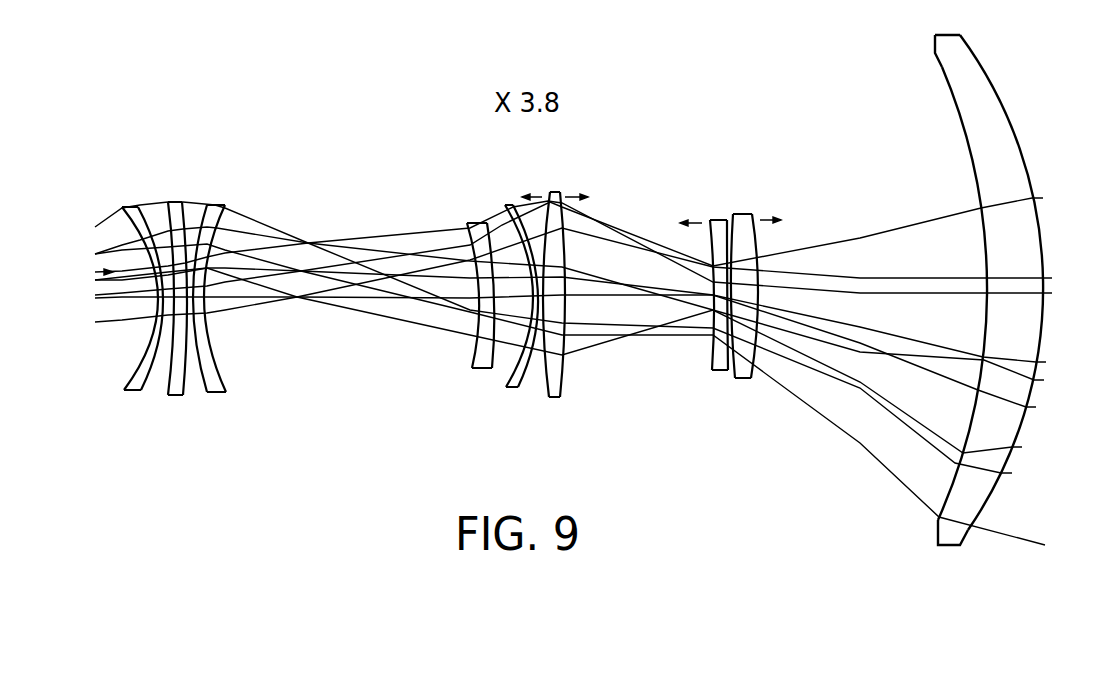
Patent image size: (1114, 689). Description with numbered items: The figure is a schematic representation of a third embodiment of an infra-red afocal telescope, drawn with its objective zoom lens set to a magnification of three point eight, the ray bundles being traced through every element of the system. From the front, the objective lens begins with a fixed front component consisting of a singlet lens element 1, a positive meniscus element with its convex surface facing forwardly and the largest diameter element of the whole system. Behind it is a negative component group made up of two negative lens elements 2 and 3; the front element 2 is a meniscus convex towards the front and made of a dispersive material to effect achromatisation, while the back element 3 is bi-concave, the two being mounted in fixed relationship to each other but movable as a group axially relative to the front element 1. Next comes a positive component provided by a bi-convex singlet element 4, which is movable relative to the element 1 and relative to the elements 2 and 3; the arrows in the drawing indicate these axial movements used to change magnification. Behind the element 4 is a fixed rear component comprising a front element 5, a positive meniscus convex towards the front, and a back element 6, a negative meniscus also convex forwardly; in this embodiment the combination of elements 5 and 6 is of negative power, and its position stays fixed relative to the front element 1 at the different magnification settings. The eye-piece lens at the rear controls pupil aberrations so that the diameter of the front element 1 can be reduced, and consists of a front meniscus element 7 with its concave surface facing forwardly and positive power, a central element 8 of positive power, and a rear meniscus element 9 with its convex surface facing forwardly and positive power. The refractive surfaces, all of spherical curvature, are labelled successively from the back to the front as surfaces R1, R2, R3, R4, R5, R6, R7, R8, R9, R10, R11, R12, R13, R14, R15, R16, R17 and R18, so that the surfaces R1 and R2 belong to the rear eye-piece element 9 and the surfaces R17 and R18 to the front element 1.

The singlet lens element 1 is at (955, 311).
The front element of negative component group 2 is at (772, 294).
The back element of negative component group 3 is at (694, 295).
The bi-convex singlet element 4 is at (591, 298).
The front element of fixed rear component 5 is at (511, 315).
The back element of fixed rear component 6 is at (457, 295).
The front meniscus element of eye-piece lens 7 is at (239, 291).
The central element of eye-piece lens 8 is at (196, 306).
The rear meniscus element of eye-piece lens 9 is at (124, 300).
The refractive surface R1 is at (122, 372).
The refractive surface R2 is at (143, 392).
The refractive surface R3 is at (167, 395).
The refractive surface R4 is at (188, 396).
The refractive surface R5 is at (212, 393).
The refractive surface R6 is at (232, 372).
The refractive surface R7 is at (468, 366).
The refractive surface R8 is at (491, 375).
The refractive surface R9 is at (504, 389).
The refractive surface R10 is at (518, 388).
The refractive surface R11 is at (552, 395).
The refractive surface R12 is at (569, 395).
The refractive surface R13 is at (707, 366).
The refractive surface R14 is at (723, 372).
The refractive surface R15 is at (738, 374).
The refractive surface R16 is at (757, 378).
The refractive surface R17 is at (946, 499).
The refractive surface R18 is at (969, 531).